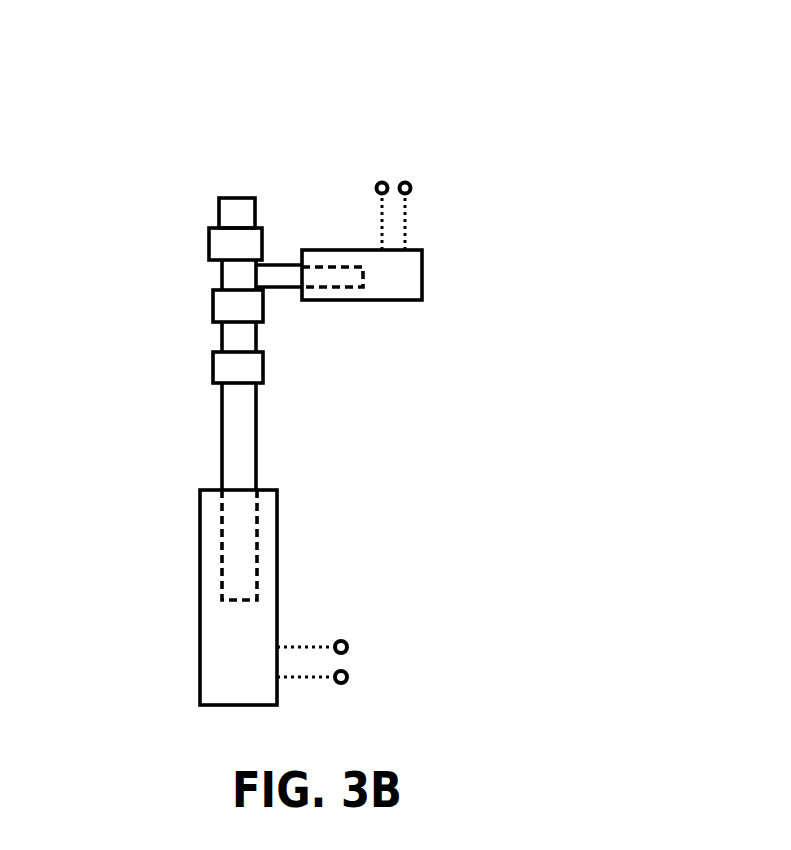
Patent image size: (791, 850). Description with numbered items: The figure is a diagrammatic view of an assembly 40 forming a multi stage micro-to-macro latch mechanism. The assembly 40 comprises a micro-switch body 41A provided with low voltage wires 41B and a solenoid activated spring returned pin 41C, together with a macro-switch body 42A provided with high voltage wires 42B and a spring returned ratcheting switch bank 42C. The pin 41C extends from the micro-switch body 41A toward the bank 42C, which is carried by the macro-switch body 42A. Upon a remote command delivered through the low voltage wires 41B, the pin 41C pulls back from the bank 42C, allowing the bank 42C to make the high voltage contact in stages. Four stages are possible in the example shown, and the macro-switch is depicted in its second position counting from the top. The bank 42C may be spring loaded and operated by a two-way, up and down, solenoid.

The assembly 40 is at (351, 96).
The micro-switch body 41A is at (420, 268).
The low voltage wires 41B is at (405, 208).
The solenoid activated spring returned pin 41C is at (282, 266).
The macro-switch body 42A is at (200, 540).
The high voltage wires 42B is at (315, 646).
The spring returned ratcheting switch bank 42C is at (222, 402).